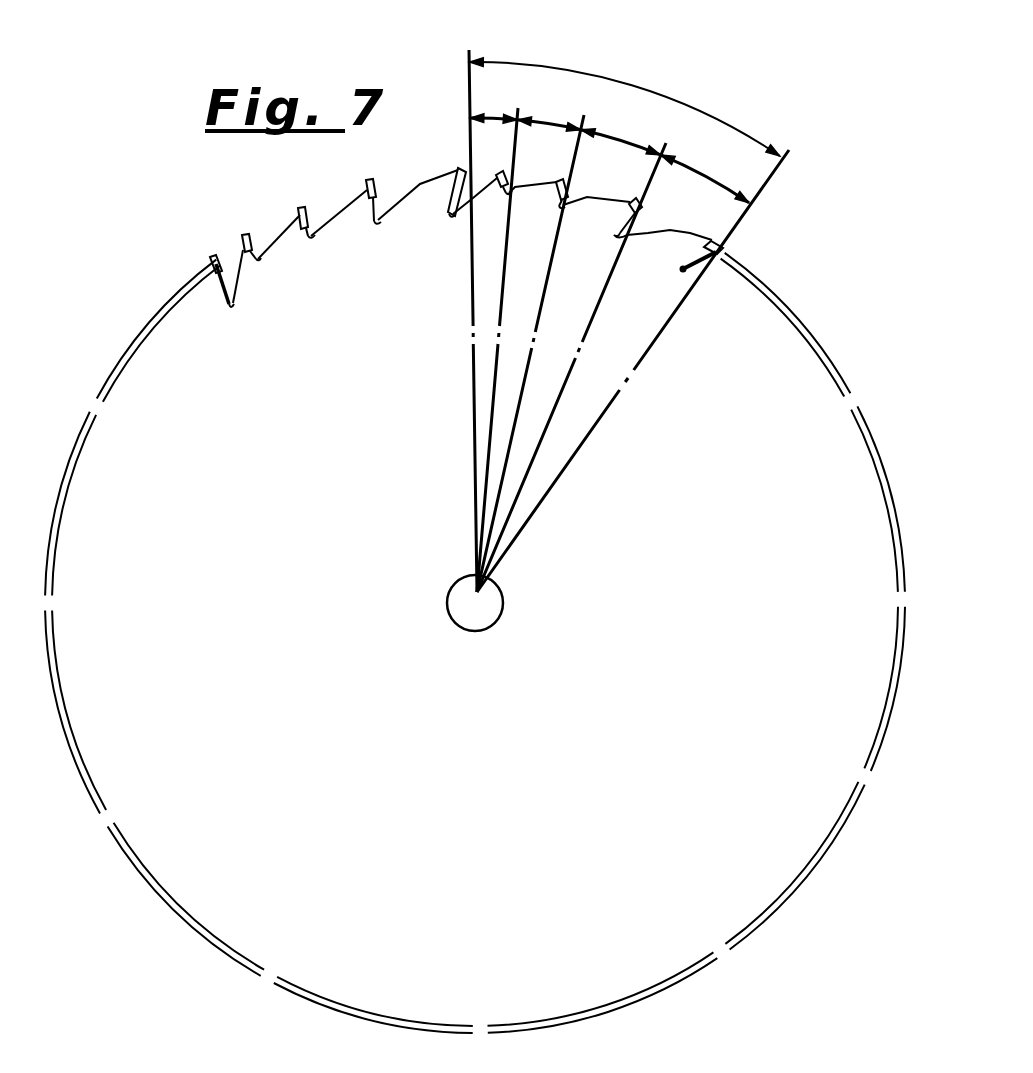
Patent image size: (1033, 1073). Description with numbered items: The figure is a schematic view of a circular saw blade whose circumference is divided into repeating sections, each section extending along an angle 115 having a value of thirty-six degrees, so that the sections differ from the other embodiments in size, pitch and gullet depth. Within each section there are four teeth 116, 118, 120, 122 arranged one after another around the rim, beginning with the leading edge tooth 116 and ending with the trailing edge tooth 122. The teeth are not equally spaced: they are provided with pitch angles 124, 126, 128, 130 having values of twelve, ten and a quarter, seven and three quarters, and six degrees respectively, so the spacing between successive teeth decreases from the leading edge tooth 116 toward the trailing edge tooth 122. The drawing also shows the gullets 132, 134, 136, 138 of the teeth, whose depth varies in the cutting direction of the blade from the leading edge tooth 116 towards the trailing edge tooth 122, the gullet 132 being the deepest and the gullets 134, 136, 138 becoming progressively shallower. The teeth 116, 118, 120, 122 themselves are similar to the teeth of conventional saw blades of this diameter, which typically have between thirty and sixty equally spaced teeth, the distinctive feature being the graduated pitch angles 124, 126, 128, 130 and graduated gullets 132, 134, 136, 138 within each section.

The angle 115 is at (622, 88).
The leading edge tooth 116 is at (434, 187).
The tooth 118 is at (352, 204).
The tooth 120 is at (287, 229).
The trailing edge tooth 122 is at (241, 246).
The pitch angle 124 is at (702, 173).
The pitch angle 126 is at (618, 134).
The pitch angle 128 is at (545, 119).
The pitch angle 130 is at (491, 118).
The gullet 132 is at (231, 312).
The gullet 134 is at (373, 224).
The gullet 136 is at (307, 240).
The gullet 138 is at (258, 262).